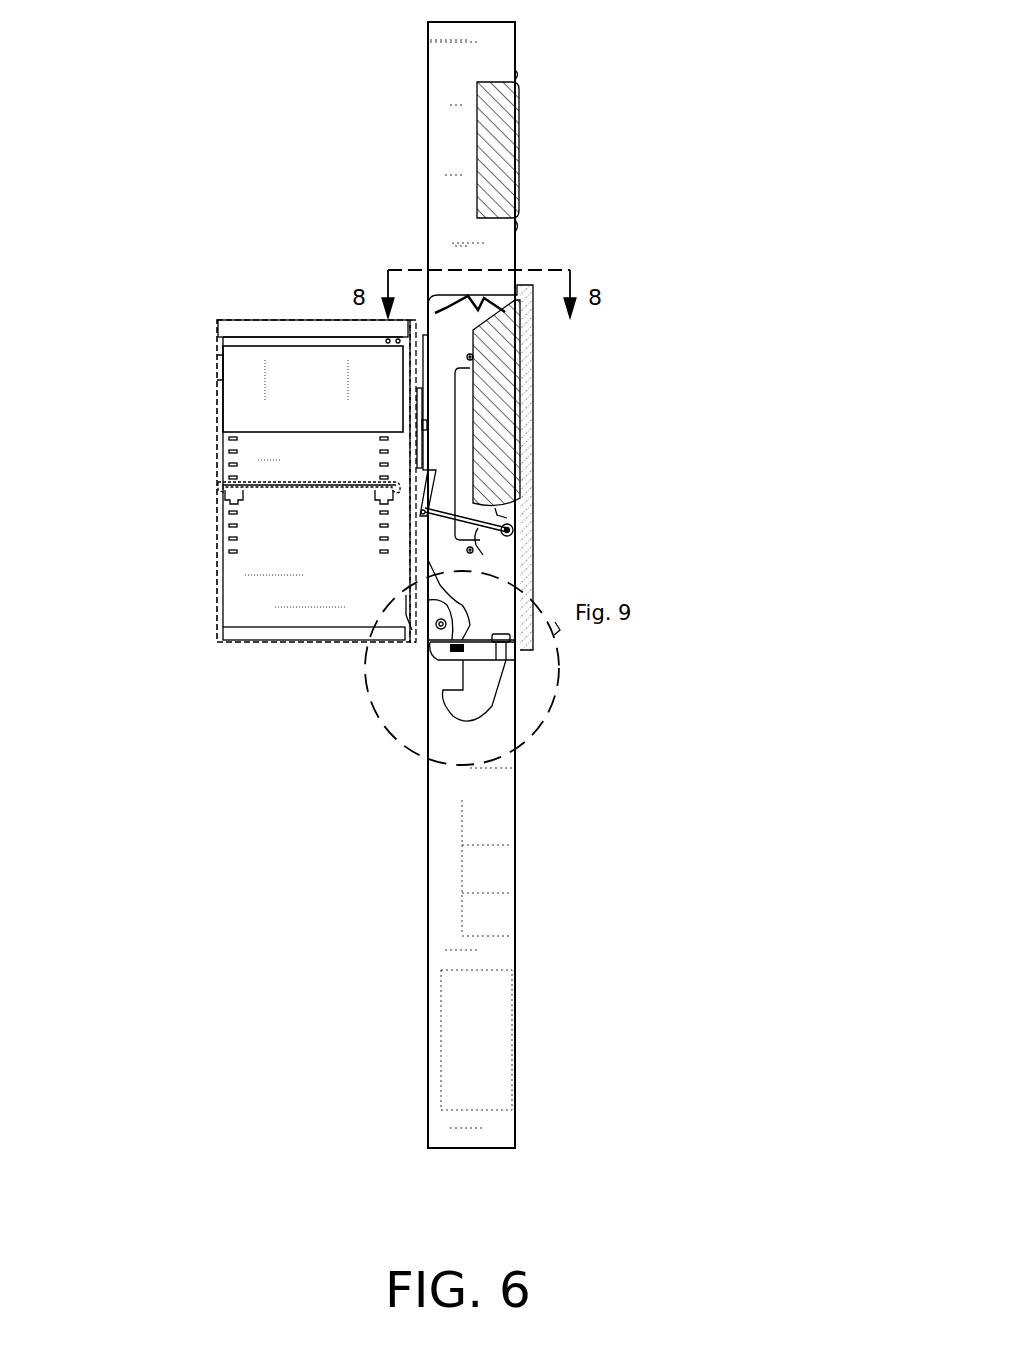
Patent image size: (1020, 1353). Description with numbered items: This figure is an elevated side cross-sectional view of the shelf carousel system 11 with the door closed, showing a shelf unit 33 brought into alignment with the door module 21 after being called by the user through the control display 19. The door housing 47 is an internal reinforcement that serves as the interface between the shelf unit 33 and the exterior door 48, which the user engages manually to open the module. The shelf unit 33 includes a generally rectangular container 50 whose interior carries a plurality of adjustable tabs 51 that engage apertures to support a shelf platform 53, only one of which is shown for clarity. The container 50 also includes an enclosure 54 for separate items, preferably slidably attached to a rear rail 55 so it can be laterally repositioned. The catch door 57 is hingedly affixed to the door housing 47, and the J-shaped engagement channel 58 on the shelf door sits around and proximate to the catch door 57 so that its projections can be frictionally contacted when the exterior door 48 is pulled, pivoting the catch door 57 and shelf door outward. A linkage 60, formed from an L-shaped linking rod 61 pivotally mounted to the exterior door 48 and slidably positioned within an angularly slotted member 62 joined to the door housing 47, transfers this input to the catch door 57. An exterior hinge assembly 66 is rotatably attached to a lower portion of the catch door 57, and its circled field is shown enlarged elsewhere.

The shelf carousel system 11 is at (176, 216).
The control display 19 is at (524, 150).
The door module 21 is at (524, 486).
The shelf unit 33 is at (215, 462).
The door housing 47 is at (440, 72).
The exterior door 48 is at (535, 300).
The container 50 is at (222, 626).
The adjustable tabs 51 is at (242, 497).
The shelf platform 53 is at (327, 484).
The enclosure 54 is at (238, 390).
The rear rail 55 is at (216, 373).
The catch door 57 is at (426, 400).
The engagement channel 58 is at (412, 360).
The linkage 60 is at (514, 532).
The linking rod 61 is at (491, 550).
The slotted member 62 is at (430, 478).
The exterior hinge assembly 66 is at (500, 705).